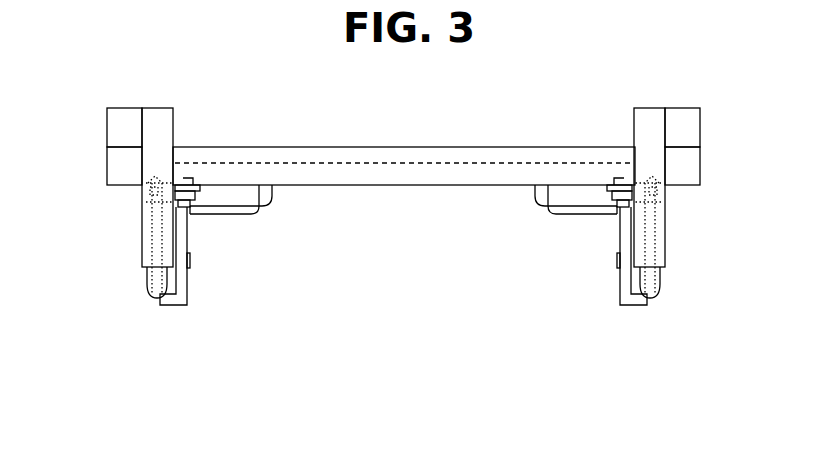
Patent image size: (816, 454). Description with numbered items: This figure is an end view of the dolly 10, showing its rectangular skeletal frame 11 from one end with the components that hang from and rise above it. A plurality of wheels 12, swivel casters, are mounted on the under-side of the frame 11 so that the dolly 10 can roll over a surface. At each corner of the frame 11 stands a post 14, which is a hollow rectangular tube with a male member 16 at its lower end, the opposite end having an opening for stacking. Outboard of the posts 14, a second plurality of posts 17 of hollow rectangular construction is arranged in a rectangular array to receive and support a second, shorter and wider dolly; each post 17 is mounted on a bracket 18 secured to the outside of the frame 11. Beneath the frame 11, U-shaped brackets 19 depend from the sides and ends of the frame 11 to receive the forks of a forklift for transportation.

The dolly 10 is at (560, 86).
The rectangular skeletal frame 11 is at (322, 150).
The wheel 12 is at (180, 296).
The post 14 is at (162, 130).
The male member 16 is at (150, 278).
The second post 17 is at (121, 119).
The bracket 18 is at (118, 172).
The U-shaped bracket 19 is at (233, 211).